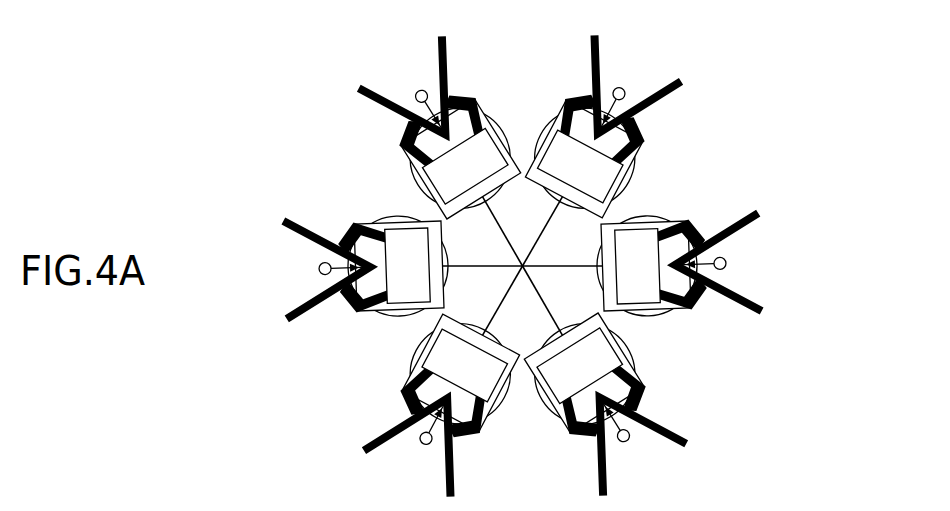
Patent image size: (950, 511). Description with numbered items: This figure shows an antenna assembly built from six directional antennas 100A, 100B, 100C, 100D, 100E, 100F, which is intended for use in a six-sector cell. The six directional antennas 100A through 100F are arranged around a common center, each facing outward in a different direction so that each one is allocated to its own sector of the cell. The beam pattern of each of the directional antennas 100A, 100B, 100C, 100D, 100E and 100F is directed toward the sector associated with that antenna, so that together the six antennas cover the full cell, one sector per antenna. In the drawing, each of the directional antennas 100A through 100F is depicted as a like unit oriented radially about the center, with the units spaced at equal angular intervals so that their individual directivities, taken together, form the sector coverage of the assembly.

The directional antenna 100A is at (662, 70).
The directional antenna 100B is at (763, 212).
The directional antenna 100C is at (658, 413).
The directional antenna 100D is at (477, 435).
The directional antenna 100E is at (278, 238).
The directional antenna 100F is at (372, 78).